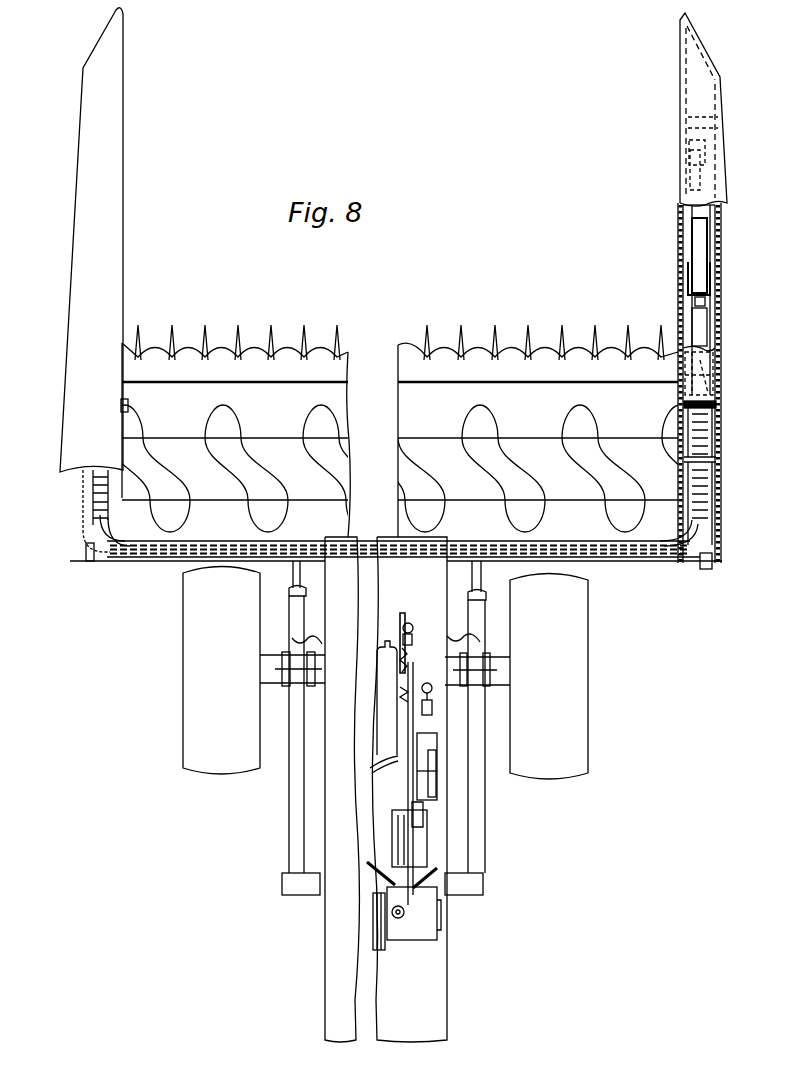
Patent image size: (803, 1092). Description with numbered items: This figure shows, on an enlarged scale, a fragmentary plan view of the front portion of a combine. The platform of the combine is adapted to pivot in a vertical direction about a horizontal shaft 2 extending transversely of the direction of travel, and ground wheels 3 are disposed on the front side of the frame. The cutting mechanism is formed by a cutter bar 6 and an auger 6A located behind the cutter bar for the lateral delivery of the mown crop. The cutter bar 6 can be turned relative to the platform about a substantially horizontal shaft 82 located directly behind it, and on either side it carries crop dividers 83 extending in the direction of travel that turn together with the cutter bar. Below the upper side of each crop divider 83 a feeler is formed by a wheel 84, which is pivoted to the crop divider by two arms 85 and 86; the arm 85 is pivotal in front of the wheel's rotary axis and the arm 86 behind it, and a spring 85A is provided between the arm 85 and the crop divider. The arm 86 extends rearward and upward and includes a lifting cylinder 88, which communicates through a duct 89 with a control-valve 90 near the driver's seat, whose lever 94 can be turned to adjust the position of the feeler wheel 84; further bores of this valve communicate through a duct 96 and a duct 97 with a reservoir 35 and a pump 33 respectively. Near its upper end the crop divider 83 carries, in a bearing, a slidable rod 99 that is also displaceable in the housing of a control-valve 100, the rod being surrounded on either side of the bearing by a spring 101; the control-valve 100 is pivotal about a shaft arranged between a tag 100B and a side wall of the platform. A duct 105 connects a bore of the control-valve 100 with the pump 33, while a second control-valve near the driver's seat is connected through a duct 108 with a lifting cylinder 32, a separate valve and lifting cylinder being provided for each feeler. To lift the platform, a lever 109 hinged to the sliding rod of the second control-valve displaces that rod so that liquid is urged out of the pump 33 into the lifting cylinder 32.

The horizontal shaft 2 is at (288, 886).
The ground wheels 3 is at (188, 630).
The cutter bar 6 is at (258, 328).
The auger 6A is at (428, 458).
The lifting cylinder 32 is at (300, 612).
The pump 33 is at (402, 933).
The reservoir 35 is at (426, 838).
The horizontal shaft 82 is at (128, 403).
The crop divider 83 is at (115, 235).
The wheel 84 is at (700, 231).
The arm 85 is at (690, 205).
The spring 85A is at (679, 158).
The arm 86 is at (690, 283).
The lifting cylinder 88 is at (700, 322).
The duct 89 is at (83, 498).
The control-valve 90 is at (407, 651).
The lever 94 is at (409, 626).
The duct 96 is at (410, 722).
The duct 97 is at (418, 851).
The slidable rod 99 is at (712, 490).
The control-valve 100 is at (706, 541).
The tag 100B is at (66, 563).
The spring 101 is at (712, 420).
The duct 105 is at (380, 877).
The duct 108 is at (292, 640).
The lever 109 is at (432, 690).